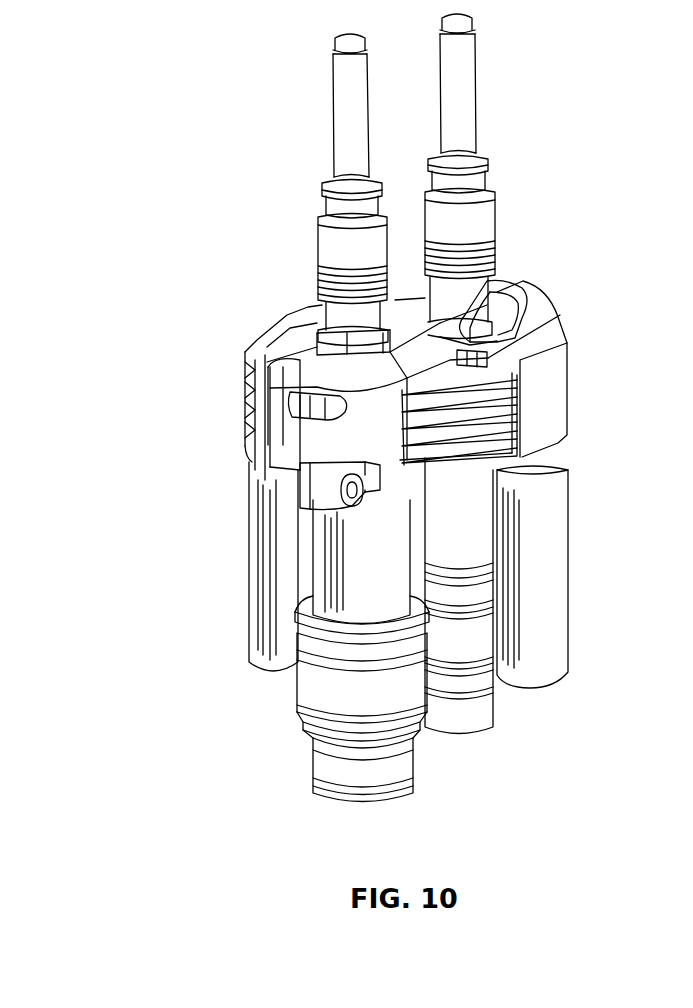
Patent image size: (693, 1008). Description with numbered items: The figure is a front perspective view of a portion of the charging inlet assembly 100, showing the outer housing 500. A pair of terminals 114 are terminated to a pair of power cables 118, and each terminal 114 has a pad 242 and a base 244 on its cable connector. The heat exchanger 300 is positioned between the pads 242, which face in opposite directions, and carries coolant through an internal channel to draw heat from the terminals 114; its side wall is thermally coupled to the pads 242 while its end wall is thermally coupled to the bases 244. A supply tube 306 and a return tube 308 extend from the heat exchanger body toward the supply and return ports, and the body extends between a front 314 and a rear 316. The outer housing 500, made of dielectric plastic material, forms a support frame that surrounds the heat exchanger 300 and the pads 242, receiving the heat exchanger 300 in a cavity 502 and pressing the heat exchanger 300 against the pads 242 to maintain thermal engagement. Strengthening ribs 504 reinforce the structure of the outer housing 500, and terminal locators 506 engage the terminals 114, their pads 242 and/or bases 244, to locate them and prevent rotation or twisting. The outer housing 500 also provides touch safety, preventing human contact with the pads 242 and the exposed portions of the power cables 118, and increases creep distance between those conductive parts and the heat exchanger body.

The charging inlet assembly 100 is at (290, 100).
The terminal 114 is at (327, 237).
The power cable 118 is at (270, 566).
The pad 242 is at (498, 325).
The base 244 is at (325, 360).
The heat exchanger 300 is at (397, 330).
The supply tube 306 is at (463, 523).
The return tube 308 is at (350, 590).
The front 314 is at (275, 310).
The rear 316 is at (270, 508).
The outer housing 500 is at (540, 405).
The cavity 502 is at (310, 446).
The strengthening rib 504 is at (500, 468).
The terminal locator 506 is at (315, 318).